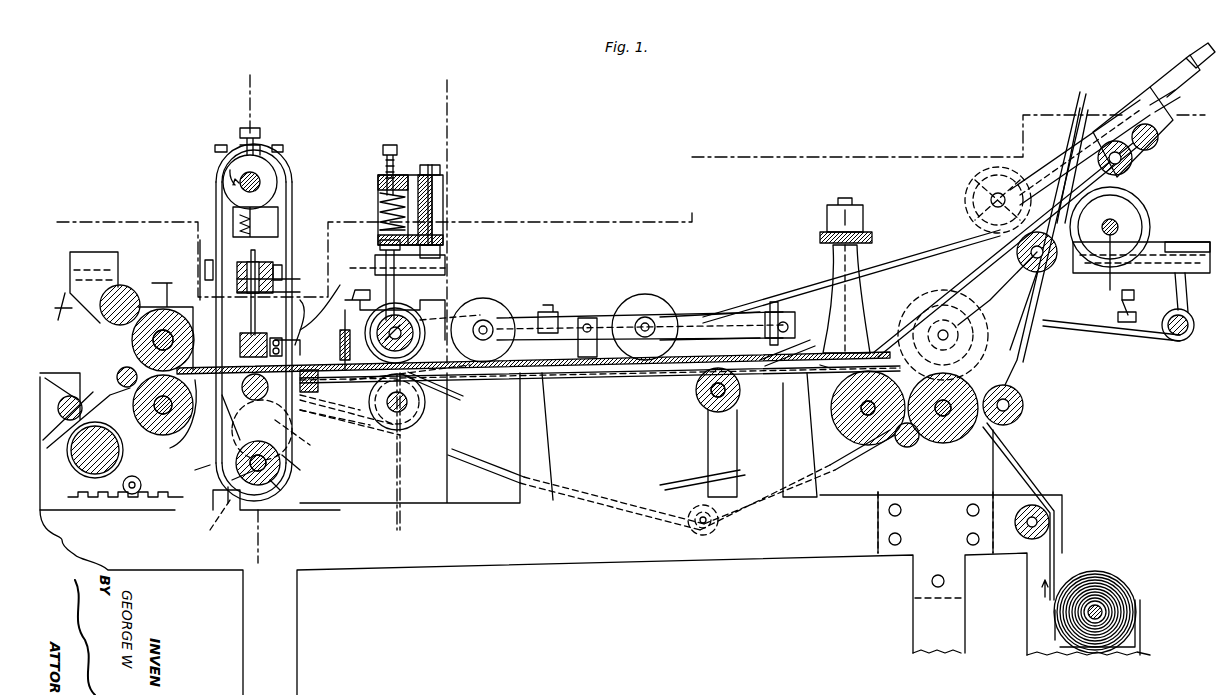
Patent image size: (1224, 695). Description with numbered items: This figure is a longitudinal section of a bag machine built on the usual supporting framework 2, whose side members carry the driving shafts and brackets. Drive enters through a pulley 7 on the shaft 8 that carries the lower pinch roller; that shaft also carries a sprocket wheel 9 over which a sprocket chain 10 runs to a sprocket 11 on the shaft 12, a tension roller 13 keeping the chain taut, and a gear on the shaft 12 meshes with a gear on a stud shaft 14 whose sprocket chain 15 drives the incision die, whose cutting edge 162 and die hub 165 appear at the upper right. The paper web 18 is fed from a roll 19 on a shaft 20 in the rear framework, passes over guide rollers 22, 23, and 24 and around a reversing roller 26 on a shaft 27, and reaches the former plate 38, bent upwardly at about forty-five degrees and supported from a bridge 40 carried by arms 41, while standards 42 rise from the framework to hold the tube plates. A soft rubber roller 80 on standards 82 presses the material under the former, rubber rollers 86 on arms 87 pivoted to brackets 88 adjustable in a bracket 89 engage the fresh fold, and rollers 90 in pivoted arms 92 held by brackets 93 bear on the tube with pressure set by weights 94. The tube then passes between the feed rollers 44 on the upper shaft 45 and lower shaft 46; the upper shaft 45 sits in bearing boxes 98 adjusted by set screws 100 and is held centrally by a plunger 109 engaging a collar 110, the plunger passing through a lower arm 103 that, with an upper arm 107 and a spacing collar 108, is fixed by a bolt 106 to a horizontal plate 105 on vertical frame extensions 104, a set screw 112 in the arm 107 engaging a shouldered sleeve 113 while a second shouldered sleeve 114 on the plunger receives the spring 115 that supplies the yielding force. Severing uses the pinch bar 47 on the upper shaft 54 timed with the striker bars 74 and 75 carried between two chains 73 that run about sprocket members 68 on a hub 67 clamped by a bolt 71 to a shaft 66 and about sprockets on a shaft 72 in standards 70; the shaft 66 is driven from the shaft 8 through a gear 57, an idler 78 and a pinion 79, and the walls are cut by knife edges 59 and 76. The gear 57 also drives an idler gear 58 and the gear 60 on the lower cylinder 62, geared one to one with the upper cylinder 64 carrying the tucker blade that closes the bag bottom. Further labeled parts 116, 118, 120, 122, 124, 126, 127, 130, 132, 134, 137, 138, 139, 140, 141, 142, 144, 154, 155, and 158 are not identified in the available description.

The supporting framework 2 is at (75, 214).
The pulley 7 is at (250, 78).
The shaft 8 is at (447, 92).
The sprocket wheel 9 is at (335, 410).
The sprocket chain 10 is at (600, 380).
The sprocket 11 is at (958, 445).
The shaft 12 is at (935, 448).
The tension roller 13 is at (690, 510).
The stud shaft 14 is at (948, 337).
The sprocket chain 15 is at (1105, 120).
The web 18 is at (935, 300).
The roll 19 is at (1120, 585).
The shaft 20 is at (1102, 615).
The guide roller 22 is at (1050, 522).
The guide roller 23 is at (1025, 405).
The guide roller 24 is at (1035, 272).
The roller 26 is at (1135, 160).
The shaft 27 is at (1138, 150).
The former plate 38 is at (626, 378).
The bridge 40 is at (868, 230).
The arms 41 is at (880, 250).
The standards 42 is at (542, 438).
The feed rollers 44 is at (425, 310).
The upper feed roller shaft 45 is at (420, 320).
The lower feed roller shaft 46 is at (392, 412).
The pinch bar 47 is at (300, 345).
The upper shaft 54 is at (240, 392).
The gear 57 is at (305, 441).
The idler gear 58 is at (240, 345).
The knife edge 59 is at (320, 307).
The gear 60 is at (128, 370).
The lower cylinder 62 is at (125, 455).
The upper cylinder 64 is at (132, 350).
The shaft 66 is at (250, 485).
The hub 67 is at (278, 480).
The sprocket members 68 is at (232, 480).
The standards 70 is at (280, 200).
The bolt 71 is at (300, 470).
The shaft 72 is at (255, 172).
The chains 73 is at (282, 173).
The striker bar 74 is at (320, 382).
The striker bar 75 is at (205, 262).
The knife edge 76 is at (350, 336).
The idler 78 is at (211, 434).
The pinion 79 is at (212, 524).
The soft rubber roller 80 is at (696, 395).
The standards 82 is at (710, 448).
The rollers 86 is at (645, 294).
The arms 87 is at (688, 317).
The brackets 88 is at (730, 318).
The bracket 89 is at (765, 312).
The rollers 90 is at (498, 308).
The pivoted arms 92 is at (586, 318).
The brackets 93 is at (592, 318).
The weights 94 is at (550, 312).
The bearing boxes 98 is at (325, 300).
The set screws 100 is at (382, 255).
The lower arm 103 is at (443, 238).
The vertical frame extension 104 is at (440, 255).
The horizontal plate 105 is at (445, 225).
The bolt 106 is at (430, 165).
The upper arm 107 is at (412, 175).
The spacing collar 108 is at (443, 192).
The plunger 109 is at (380, 268).
The collar 110 is at (350, 375).
The set screw 112 is at (388, 143).
The shouldered sleeve 113 is at (380, 192).
The second shouldered sleeve 114 is at (380, 232).
The spring 115 is at (382, 203).
The roller 116 is at (412, 318).
The plate 118 is at (284, 278).
The plate 120 is at (284, 291).
The rod 122 is at (253, 286).
The block 124 is at (265, 262).
The block 126 is at (240, 335).
The plate 127 is at (283, 270).
The link 130 is at (450, 388).
The rod 132 is at (785, 300).
The roller 134 is at (1150, 220).
The gear 137 is at (998, 167).
The roller 138 is at (1050, 270).
The arm 139 is at (1195, 300).
The pivot 140 is at (1180, 340).
The arm 141 is at (1155, 330).
The nut 142 is at (1125, 322).
The rod 144 is at (1110, 265).
The trough 154 is at (1085, 335).
The lip 155 is at (1187, 235).
The arm 158 is at (1085, 130).
The cutting edge 162 is at (1165, 115).
The die hub 165 is at (1120, 130).